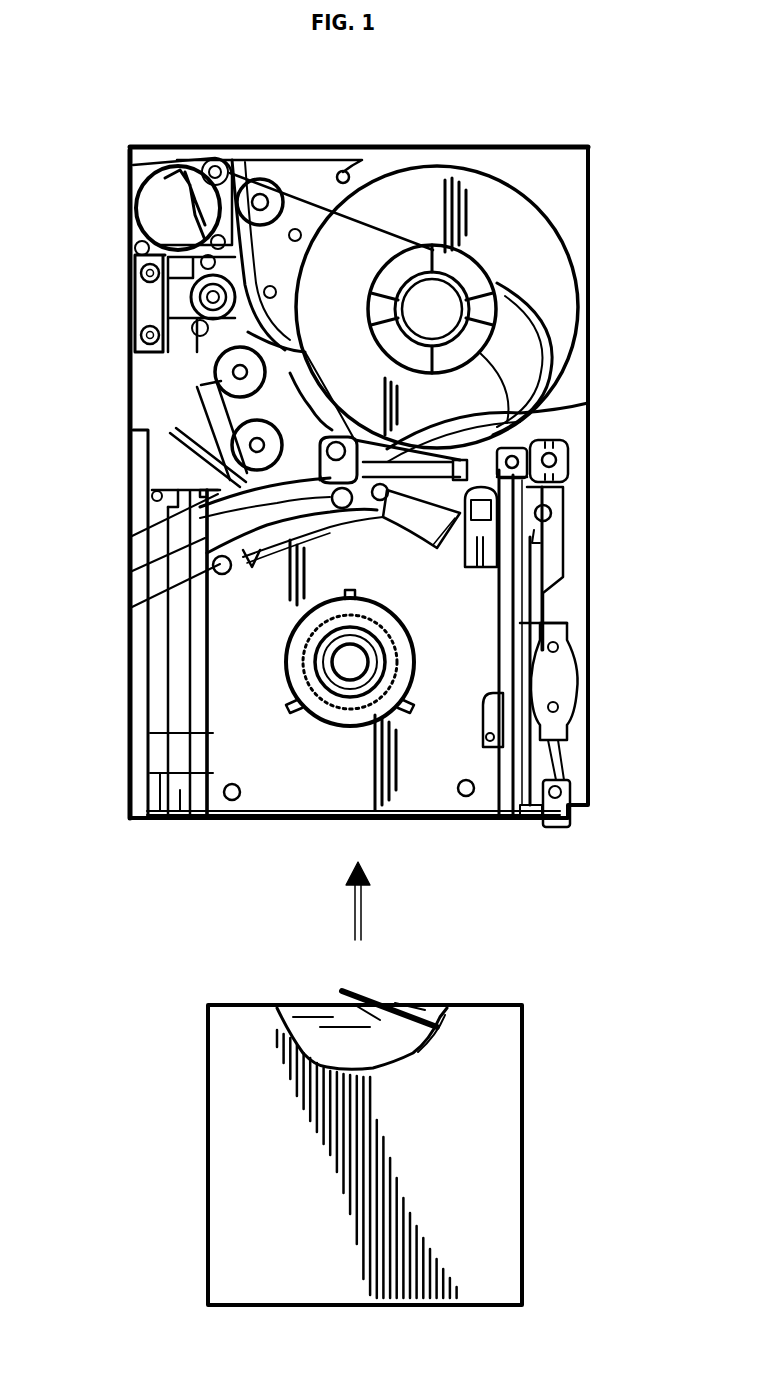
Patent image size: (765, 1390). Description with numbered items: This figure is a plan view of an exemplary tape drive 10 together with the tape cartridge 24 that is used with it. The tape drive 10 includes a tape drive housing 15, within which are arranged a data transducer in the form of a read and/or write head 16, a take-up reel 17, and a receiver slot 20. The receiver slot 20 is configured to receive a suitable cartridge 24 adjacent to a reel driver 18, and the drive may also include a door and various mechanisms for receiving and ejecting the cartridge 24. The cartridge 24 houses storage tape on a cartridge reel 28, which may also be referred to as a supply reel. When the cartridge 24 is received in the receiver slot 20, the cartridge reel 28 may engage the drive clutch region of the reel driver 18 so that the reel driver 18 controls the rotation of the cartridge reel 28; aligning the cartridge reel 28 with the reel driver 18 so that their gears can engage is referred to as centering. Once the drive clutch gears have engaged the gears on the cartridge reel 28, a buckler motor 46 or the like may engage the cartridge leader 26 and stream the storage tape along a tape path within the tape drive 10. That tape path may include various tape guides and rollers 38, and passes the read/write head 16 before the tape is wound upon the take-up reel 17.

The tape drive 10 is at (606, 440).
The tape drive housing 15 is at (590, 545).
The read and/or write head 16 is at (205, 297).
The take-up reel 17 is at (552, 268).
The reel driver 18 is at (300, 677).
The receiver slot 20 is at (483, 822).
The cartridge 24 is at (528, 1100).
The cartridge leader 26 is at (370, 996).
The cartridge reel 28 is at (303, 1005).
The rollers 38 is at (245, 452).
The buckler motor 46 is at (172, 537).